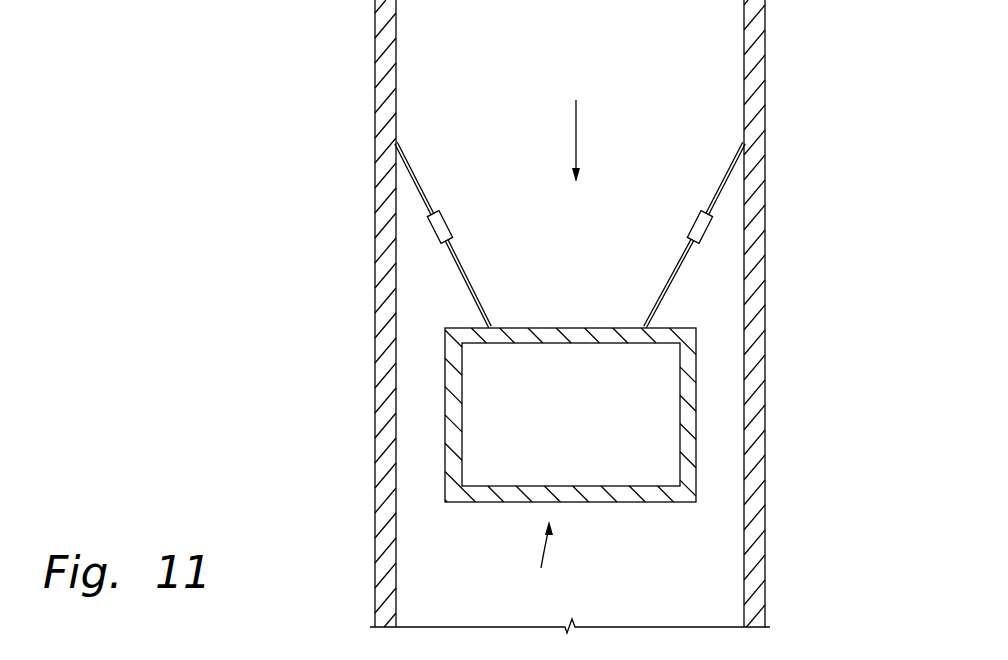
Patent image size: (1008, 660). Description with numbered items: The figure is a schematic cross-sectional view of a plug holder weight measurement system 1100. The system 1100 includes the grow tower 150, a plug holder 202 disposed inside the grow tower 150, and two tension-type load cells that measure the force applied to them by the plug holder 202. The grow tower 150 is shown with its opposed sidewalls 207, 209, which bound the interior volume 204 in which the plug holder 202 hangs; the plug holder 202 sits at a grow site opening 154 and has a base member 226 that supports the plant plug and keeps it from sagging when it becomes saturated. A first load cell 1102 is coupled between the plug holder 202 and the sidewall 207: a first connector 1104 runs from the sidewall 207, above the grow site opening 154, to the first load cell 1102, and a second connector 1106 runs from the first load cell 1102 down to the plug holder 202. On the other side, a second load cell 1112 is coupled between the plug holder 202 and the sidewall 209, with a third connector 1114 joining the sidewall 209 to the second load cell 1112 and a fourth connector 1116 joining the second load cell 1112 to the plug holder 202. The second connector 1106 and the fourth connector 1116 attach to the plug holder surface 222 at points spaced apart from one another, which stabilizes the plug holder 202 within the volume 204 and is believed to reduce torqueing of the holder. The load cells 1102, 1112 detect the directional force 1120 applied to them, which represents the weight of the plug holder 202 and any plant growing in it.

The grow tower 150 is at (790, 188).
The grow site opening 154 is at (533, 557).
The plug holder 202 is at (587, 425).
The interior volume 204 is at (590, 46).
The sidewall 207 is at (375, 412).
The sidewall 209 is at (765, 412).
The surface 222 is at (540, 328).
The base member 226 is at (583, 503).
The plug holder weight measurement system 1100 is at (187, 470).
The first load cell 1102 is at (448, 221).
The first connector 1104 is at (413, 170).
The second connector 1106 is at (462, 262).
The second load cell 1112 is at (693, 223).
The third connector 1114 is at (727, 175).
The fourth connector 1116 is at (676, 268).
The directional force 1120 is at (578, 125).